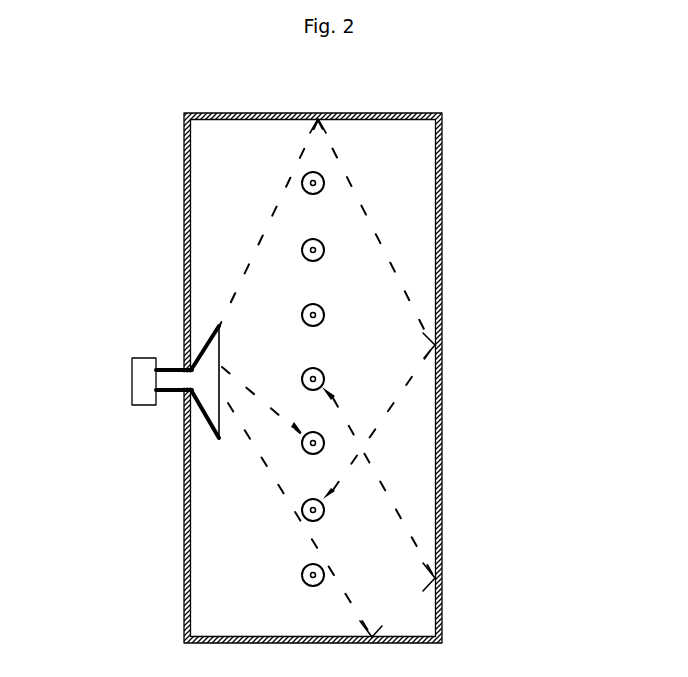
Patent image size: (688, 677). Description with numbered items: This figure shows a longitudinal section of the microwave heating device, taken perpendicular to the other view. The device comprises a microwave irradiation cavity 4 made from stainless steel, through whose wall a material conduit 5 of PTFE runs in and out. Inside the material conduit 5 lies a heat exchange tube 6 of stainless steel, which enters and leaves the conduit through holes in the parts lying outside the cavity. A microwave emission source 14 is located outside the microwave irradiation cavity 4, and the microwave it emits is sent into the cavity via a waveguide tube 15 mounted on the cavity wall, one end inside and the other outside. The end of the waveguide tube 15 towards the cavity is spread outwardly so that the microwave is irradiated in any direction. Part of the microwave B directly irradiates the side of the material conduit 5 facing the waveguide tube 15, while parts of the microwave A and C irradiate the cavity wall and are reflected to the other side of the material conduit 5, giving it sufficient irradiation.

The microwave irradiation cavity 4 is at (408, 352).
The material conduit 5 is at (463, 338).
The heat exchange tube 6 is at (474, 351).
The microwave emission source 14 is at (107, 395).
The waveguide tube 15 is at (156, 359).
The microwave A is at (406, 238).
The microwave B is at (406, 435).
The microwave C is at (405, 492).